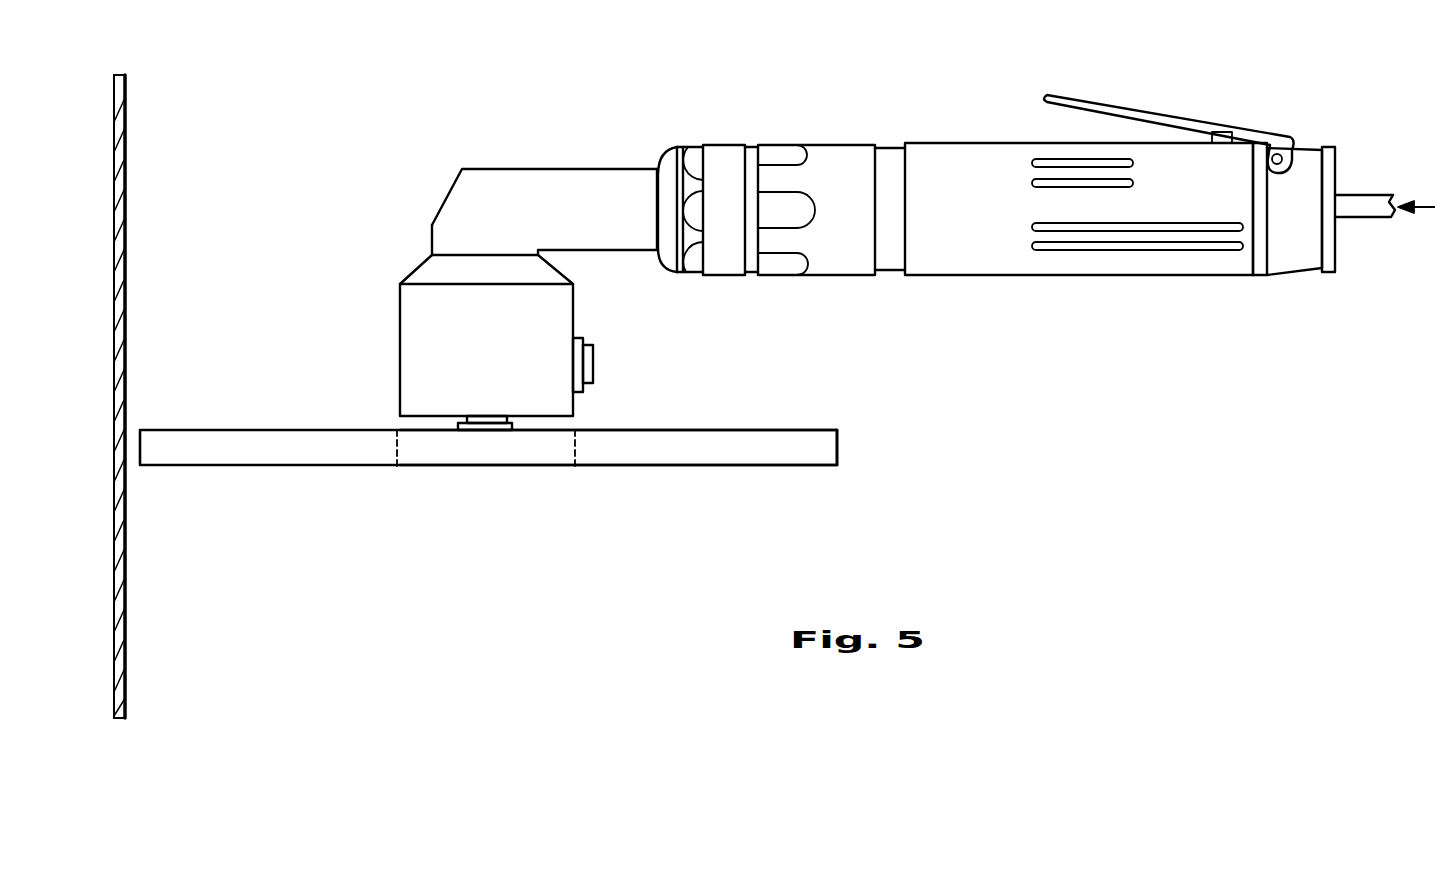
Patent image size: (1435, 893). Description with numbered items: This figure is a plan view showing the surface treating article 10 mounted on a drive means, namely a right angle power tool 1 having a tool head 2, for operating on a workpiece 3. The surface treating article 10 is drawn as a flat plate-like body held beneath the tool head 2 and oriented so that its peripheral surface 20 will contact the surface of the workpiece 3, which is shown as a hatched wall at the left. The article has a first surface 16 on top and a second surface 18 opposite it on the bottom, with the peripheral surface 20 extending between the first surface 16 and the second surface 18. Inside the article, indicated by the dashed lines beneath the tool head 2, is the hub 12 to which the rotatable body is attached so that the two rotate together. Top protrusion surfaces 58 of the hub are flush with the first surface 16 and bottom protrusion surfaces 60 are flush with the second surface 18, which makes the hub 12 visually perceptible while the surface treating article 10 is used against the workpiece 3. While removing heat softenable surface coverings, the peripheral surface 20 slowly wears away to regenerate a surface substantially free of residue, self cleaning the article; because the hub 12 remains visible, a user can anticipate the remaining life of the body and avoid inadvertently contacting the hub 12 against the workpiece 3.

The pneumatic tool 1 is at (844, 165).
The tool head housing 2 is at (423, 349).
The workpiece 3 is at (120, 175).
The surface treating article 10 is at (728, 465).
The hub 12 is at (392, 447).
The first surface 16 is at (688, 429).
The second surface 18 is at (610, 465).
The peripheral surface 20 is at (837, 440).
The top protrusion surfaces 58 is at (403, 430).
The bottom protrusion surfaces 60 is at (437, 466).